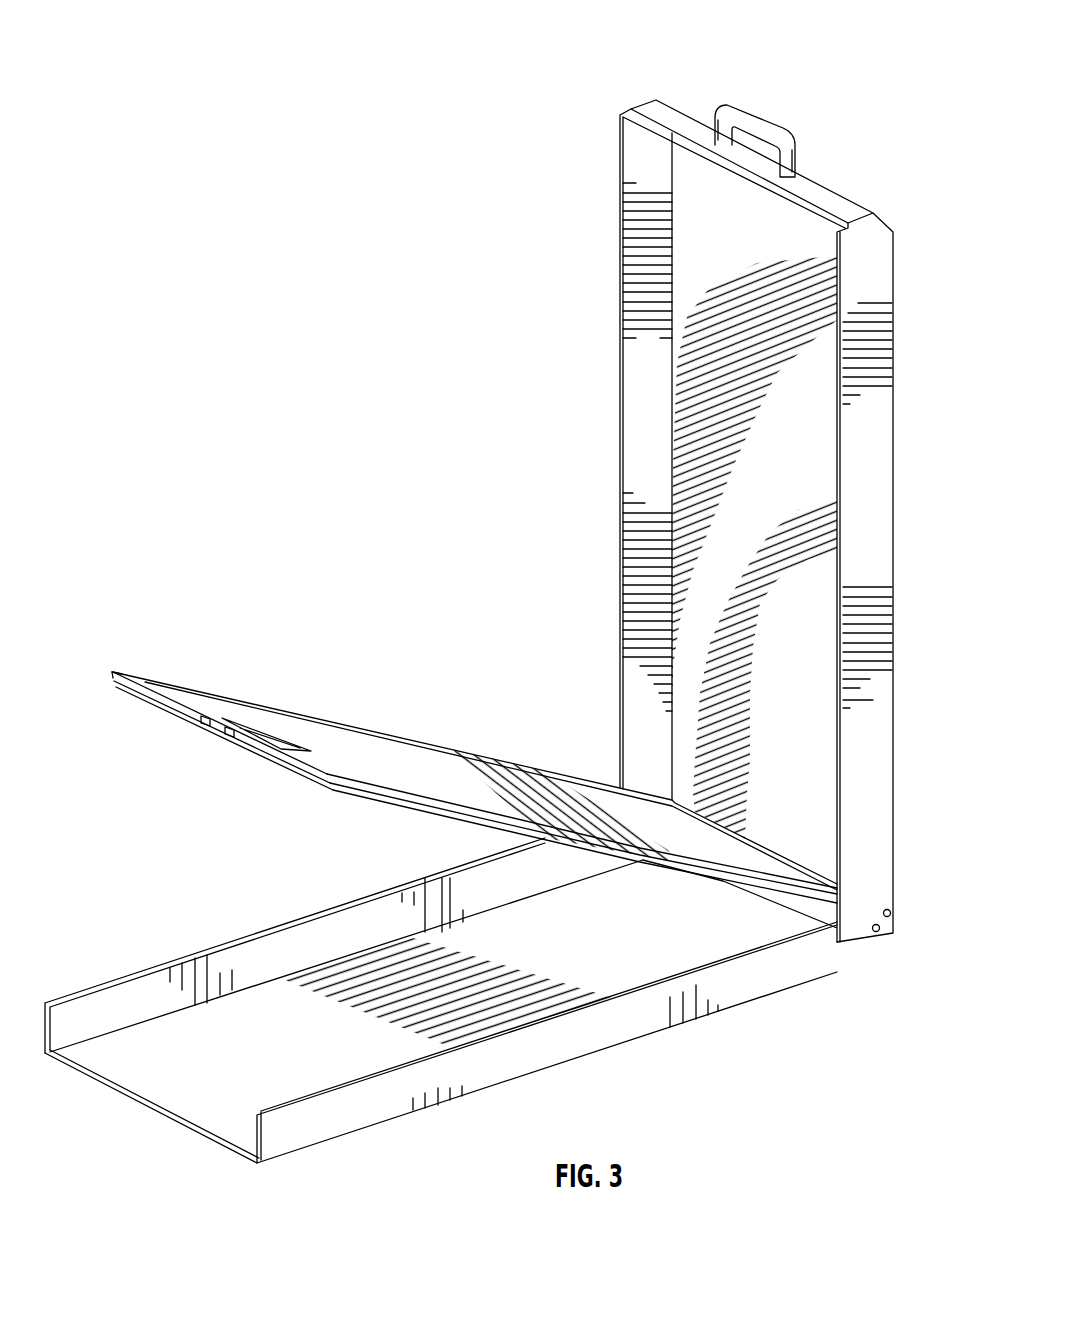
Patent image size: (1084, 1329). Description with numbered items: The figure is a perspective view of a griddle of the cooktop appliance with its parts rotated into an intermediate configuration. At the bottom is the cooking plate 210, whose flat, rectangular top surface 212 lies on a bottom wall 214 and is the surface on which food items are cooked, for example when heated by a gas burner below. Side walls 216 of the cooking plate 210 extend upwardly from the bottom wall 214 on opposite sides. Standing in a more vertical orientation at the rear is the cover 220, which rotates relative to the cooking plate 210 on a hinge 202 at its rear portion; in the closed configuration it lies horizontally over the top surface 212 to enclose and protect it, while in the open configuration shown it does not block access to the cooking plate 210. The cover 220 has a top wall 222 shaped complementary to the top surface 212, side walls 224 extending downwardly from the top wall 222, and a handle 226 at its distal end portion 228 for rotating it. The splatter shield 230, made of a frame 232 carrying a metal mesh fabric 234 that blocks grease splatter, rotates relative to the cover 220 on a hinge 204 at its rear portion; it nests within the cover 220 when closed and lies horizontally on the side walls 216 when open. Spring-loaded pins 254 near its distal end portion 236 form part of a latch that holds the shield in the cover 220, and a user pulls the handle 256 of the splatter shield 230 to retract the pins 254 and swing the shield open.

The hinge 202 is at (866, 936).
The hinge 204 is at (896, 913).
The cooking plate 210 is at (592, 1058).
The top surface 212 is at (240, 1048).
The bottom wall 214 is at (165, 1113).
The side walls 216 is at (77, 995).
The cover 220 is at (895, 503).
The top wall 222 is at (748, 518).
The side walls 224 is at (635, 352).
The handle 226 is at (752, 118).
The distal end portion 228 is at (903, 209).
The splatter shield 230 is at (470, 790).
The frame 232 is at (420, 815).
The mesh fabric 234 is at (385, 757).
The distal end portion 236 is at (111, 671).
The spring-loaded pins 254 is at (230, 733).
The handle 256 is at (260, 727).